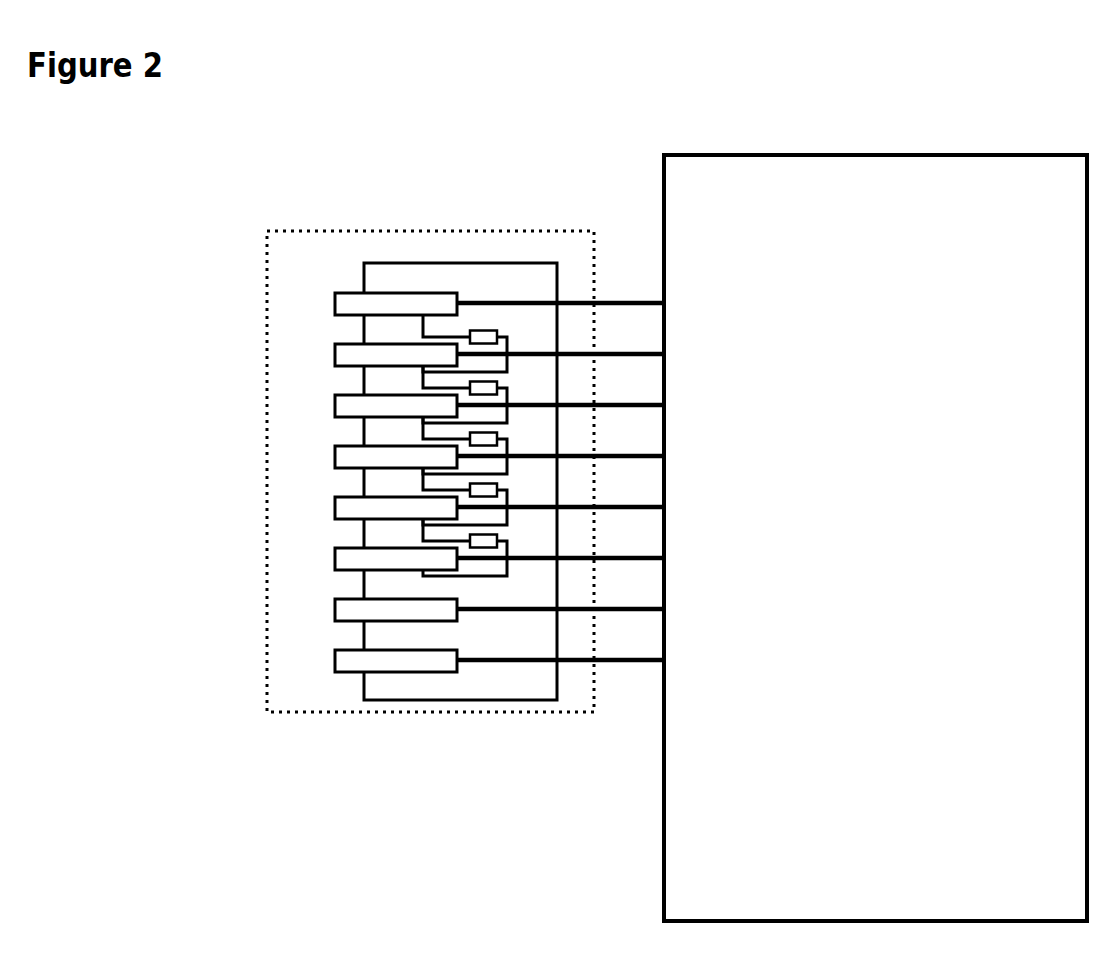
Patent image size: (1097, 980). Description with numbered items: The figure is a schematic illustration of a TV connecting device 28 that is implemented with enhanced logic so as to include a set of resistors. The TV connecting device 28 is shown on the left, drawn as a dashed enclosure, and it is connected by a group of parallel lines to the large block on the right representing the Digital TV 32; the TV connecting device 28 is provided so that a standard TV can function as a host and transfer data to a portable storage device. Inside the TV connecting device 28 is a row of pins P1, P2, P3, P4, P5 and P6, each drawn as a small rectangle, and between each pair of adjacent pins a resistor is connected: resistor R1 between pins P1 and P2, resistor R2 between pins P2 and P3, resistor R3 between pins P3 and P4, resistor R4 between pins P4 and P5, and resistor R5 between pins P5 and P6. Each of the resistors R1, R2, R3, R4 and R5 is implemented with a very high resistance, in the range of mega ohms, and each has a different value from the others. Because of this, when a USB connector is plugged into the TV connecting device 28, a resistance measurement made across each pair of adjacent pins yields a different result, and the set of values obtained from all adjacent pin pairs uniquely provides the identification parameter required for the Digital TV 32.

The TV connecting device 28 is at (430, 471).
The Digital TV 32 is at (875, 538).
The pin P1 is at (396, 303).
The pin P2 is at (396, 354).
The pin P3 is at (396, 405).
The pin P4 is at (396, 456).
The pin P5 is at (396, 507).
The pin P6 is at (396, 558).
The resistor R1 is at (505, 327).
The resistor R2 is at (505, 378).
The resistor R3 is at (505, 428).
The resistor R4 is at (505, 480).
The resistor R5 is at (505, 530).